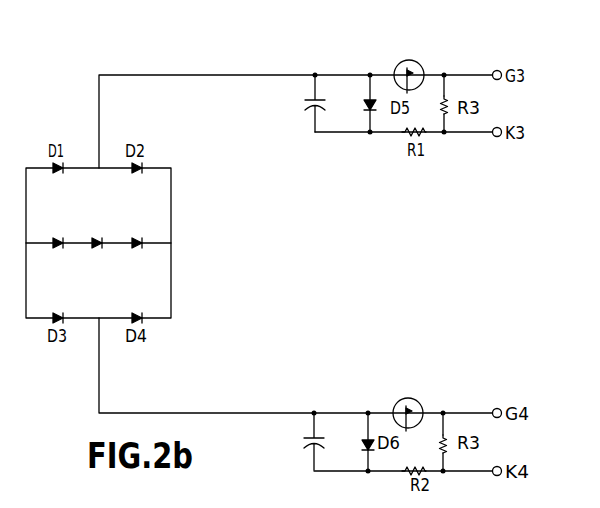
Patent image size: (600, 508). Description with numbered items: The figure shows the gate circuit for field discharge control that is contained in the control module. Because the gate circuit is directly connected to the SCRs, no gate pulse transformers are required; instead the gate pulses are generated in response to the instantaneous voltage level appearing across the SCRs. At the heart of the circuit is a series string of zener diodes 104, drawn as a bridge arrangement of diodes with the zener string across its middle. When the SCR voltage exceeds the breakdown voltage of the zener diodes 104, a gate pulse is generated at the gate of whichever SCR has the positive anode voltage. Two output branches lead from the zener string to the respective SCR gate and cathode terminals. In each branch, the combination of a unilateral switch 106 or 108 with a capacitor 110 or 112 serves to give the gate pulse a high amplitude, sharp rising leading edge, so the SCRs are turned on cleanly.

The series string of zener diodes 104 is at (80, 244).
The unilateral switch 106 is at (397, 67).
The unilateral switch 108 is at (395, 405).
The capacitor 110 is at (307, 108).
The capacitor 112 is at (306, 448).